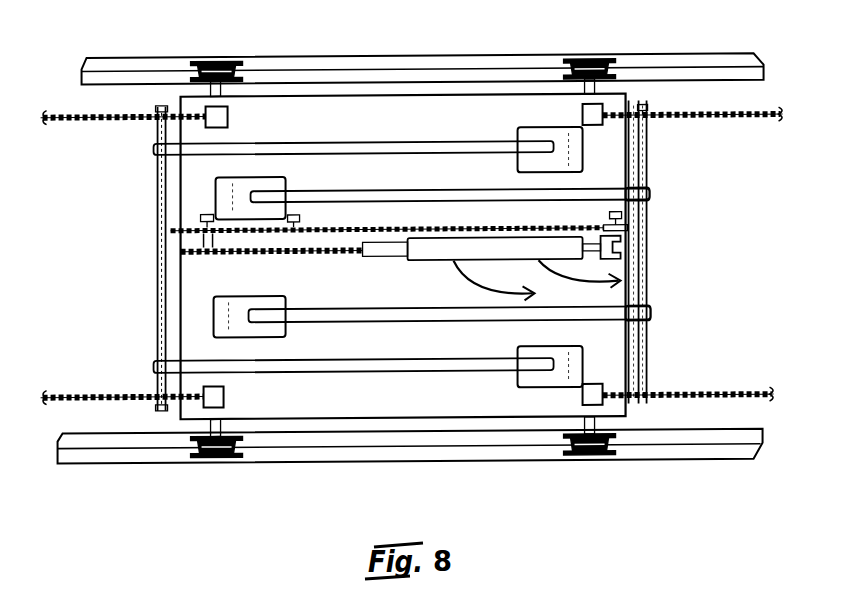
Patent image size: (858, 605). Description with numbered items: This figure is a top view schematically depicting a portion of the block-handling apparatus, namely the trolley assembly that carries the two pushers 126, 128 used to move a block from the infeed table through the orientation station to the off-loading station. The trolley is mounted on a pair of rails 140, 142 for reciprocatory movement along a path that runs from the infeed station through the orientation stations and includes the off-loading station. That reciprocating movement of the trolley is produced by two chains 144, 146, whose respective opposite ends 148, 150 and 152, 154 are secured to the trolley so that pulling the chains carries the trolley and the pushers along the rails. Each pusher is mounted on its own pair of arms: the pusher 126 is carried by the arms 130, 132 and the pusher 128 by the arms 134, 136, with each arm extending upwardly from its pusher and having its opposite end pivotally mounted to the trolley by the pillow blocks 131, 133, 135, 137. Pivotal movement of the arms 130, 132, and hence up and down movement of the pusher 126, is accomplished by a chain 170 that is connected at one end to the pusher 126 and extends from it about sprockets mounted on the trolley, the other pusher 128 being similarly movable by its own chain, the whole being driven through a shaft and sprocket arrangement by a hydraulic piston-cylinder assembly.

The pusher 126 is at (643, 355).
The pusher 128 is at (157, 336).
The arm 130 is at (651, 196).
The pillow block 131 is at (267, 178).
The arm 132 is at (652, 320).
The pillow block 133 is at (263, 298).
The arm 134 is at (153, 150).
The pillow block 135 is at (530, 131).
The arm 136 is at (152, 366).
The pillow block 137 is at (533, 350).
The rail 140 is at (690, 455).
The rail 142 is at (668, 59).
The chain 144 is at (722, 395).
The chain 146 is at (727, 123).
The chain end 148 is at (610, 388).
The chain end 150 is at (187, 393).
The chain end 152 is at (613, 126).
The chain end 154 is at (190, 122).
The chain 170 is at (385, 230).